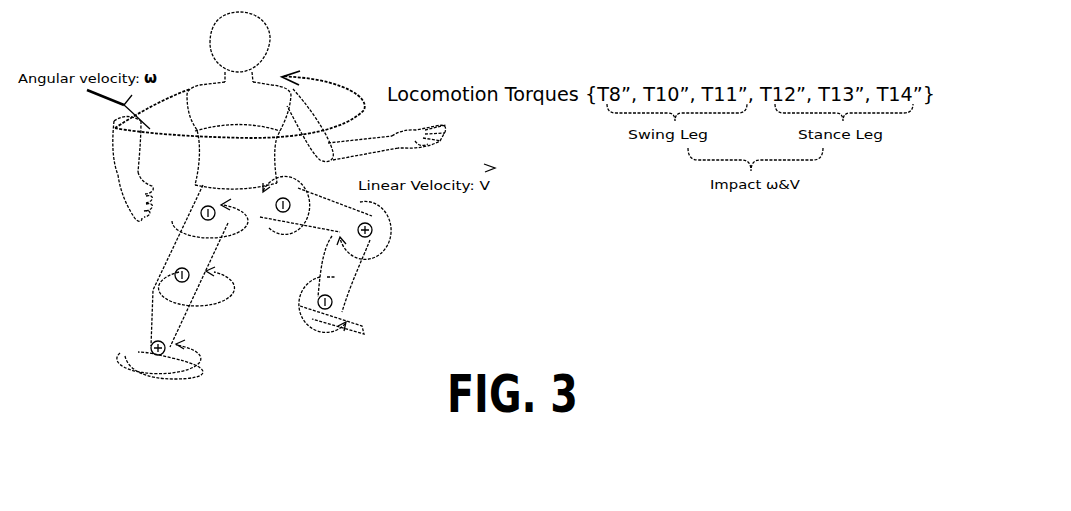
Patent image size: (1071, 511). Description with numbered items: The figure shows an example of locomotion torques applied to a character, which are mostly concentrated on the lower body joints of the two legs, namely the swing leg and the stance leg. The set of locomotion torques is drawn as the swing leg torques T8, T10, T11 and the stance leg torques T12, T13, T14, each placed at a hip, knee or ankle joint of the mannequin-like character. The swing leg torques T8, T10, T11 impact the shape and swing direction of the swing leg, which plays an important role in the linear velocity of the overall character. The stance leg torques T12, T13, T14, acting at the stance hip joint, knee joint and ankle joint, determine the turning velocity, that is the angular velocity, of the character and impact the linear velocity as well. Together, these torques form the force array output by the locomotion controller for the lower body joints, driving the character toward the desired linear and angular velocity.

The hip joint torque (swing leg) T8 is at (290, 202).
The knee joint torque (swing leg) T10 is at (372, 230).
The ankle joint torque (swing leg) T11 is at (333, 304).
The hip joint torque (stance leg) T12 is at (207, 215).
The knee joint torque (stance leg) T13 is at (184, 286).
The ankle joint torque (stance leg) T14 is at (156, 356).